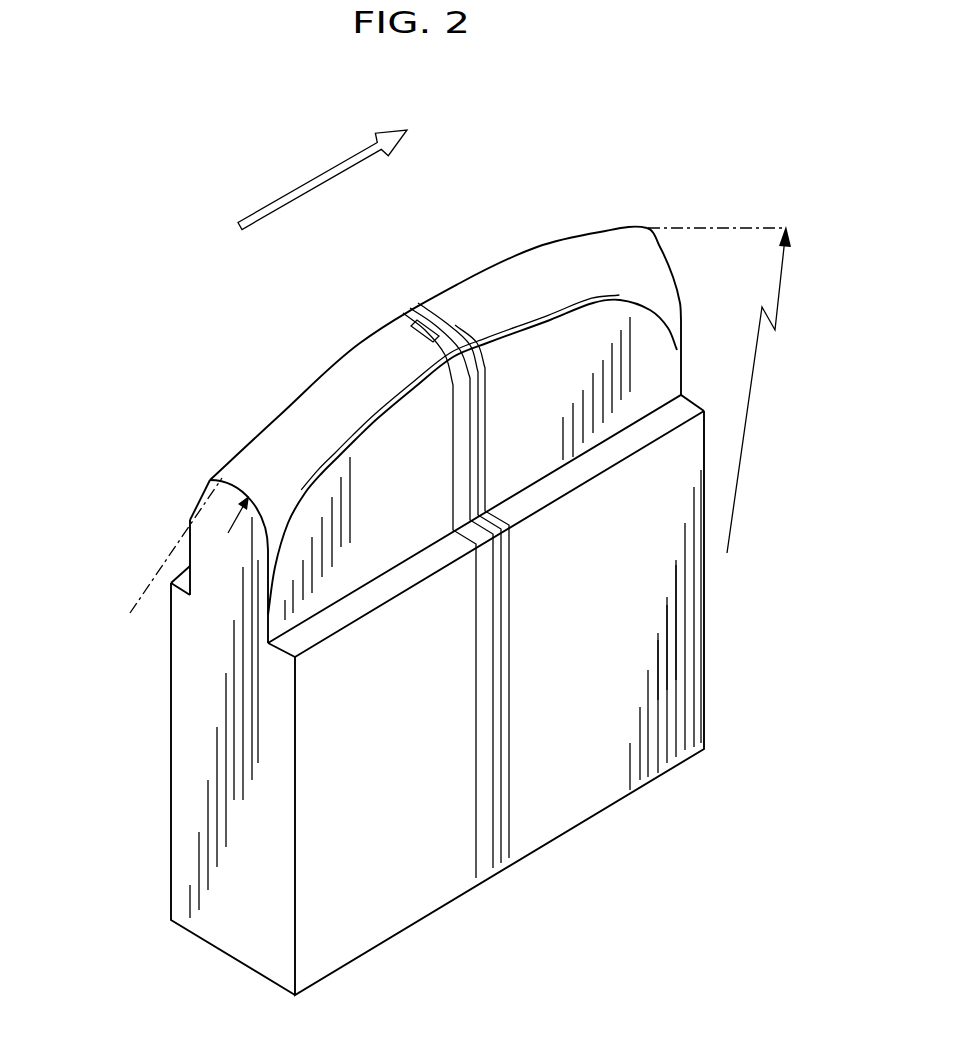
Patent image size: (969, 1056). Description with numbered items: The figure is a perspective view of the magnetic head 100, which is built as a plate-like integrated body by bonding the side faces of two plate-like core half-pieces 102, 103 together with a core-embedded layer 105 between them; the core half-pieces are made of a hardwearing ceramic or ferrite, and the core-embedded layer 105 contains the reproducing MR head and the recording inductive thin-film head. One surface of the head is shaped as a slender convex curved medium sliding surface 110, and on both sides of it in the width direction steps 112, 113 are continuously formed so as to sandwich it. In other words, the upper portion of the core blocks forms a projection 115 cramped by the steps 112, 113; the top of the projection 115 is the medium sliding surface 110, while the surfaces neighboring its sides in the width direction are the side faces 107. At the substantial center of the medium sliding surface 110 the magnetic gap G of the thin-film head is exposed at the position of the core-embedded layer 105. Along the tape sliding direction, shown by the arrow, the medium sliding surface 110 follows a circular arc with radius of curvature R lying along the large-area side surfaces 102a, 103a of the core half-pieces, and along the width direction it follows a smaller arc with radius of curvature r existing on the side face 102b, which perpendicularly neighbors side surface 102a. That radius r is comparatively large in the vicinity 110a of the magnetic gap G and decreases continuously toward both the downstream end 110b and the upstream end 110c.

The magnetic head 100 is at (438, 564).
The core half-piece 102 is at (383, 708).
The side surface of the core half-piece 102a is at (395, 898).
The side face of the core half-piece 102b is at (208, 722).
The core half-piece 103 is at (683, 650).
The side surface of the core half-piece 103a is at (557, 755).
The core-embedded layer 105 is at (485, 868).
The side face 107 is at (192, 546).
The medium sliding surface 110 is at (533, 277).
The vicinity of the magnetic gap 110a is at (457, 313).
The downstream end 110b is at (627, 250).
The upstream end 110c is at (237, 468).
The step 112 is at (690, 390).
The step 113 is at (176, 585).
The projection 115 is at (195, 490).
The magnetic gap G is at (427, 331).
The radius of curvature R is at (460, 419).
The radius of curvature r is at (237, 514).